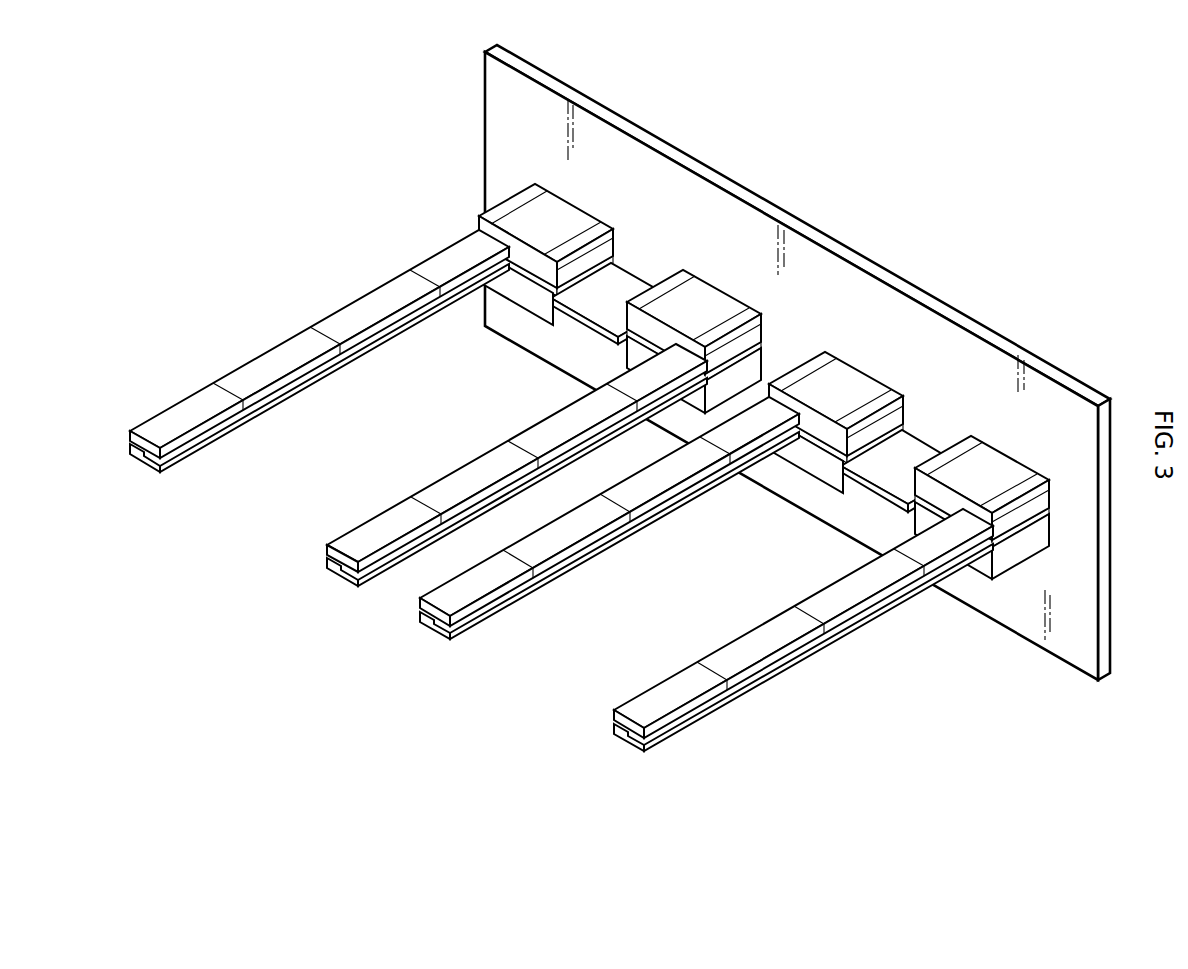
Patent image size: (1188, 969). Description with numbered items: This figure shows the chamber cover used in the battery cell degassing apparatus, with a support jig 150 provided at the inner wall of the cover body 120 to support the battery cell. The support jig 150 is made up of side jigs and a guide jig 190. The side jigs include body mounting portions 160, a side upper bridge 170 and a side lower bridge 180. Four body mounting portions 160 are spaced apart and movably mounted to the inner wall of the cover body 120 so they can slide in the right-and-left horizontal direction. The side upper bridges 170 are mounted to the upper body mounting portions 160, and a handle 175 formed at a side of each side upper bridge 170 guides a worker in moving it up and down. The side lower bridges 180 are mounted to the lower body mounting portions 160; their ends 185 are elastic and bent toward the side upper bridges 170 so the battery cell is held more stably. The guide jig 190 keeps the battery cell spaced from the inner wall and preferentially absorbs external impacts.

The cover body 120 is at (797, 362).
The support jig 150 is at (599, 473).
The body mounting portion 160 is at (520, 213).
The side upper bridge 170 is at (561, 494).
The handle 175 is at (660, 731).
The side lower bridge 180 is at (561, 524).
The end of side lower bridge 185 is at (642, 752).
The guide jig 190 is at (553, 288).